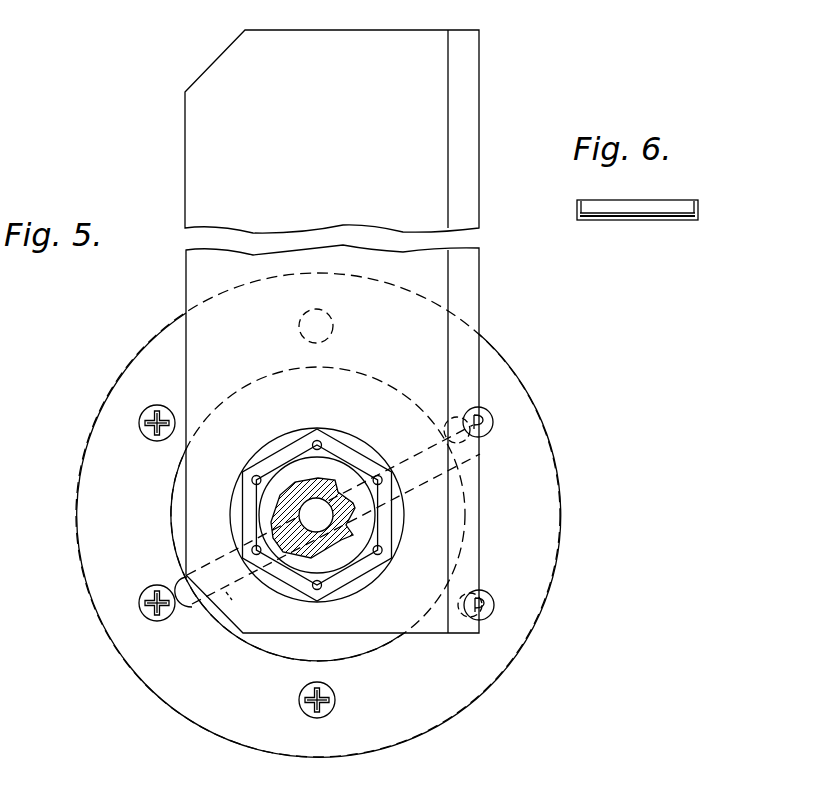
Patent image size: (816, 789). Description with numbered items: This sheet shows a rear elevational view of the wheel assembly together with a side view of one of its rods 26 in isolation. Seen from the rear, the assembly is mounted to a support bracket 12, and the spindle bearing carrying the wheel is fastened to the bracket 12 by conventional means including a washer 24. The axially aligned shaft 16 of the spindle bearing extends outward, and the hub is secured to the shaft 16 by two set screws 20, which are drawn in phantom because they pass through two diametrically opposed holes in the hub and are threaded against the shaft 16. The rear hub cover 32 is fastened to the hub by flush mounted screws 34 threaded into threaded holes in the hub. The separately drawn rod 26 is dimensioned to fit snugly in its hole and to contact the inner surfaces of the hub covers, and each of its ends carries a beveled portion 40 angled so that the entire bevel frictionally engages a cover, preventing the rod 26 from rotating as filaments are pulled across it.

In FIG. 5, the support bracket 12 is at (467, 105).
In FIG. 5, the shaft 16 is at (331, 528).
In FIG. 5, the set screws 20 is at (480, 472).
In FIG. 5, the washer 24 is at (170, 495).
In FIG. 6, the rods 26 is at (657, 207).
In FIG. 5, the rear hub cover 32 is at (530, 587).
In FIG. 5, the flush mounted screws 34 is at (327, 716).
In FIG. 6, the beveled portion 40 is at (578, 221).